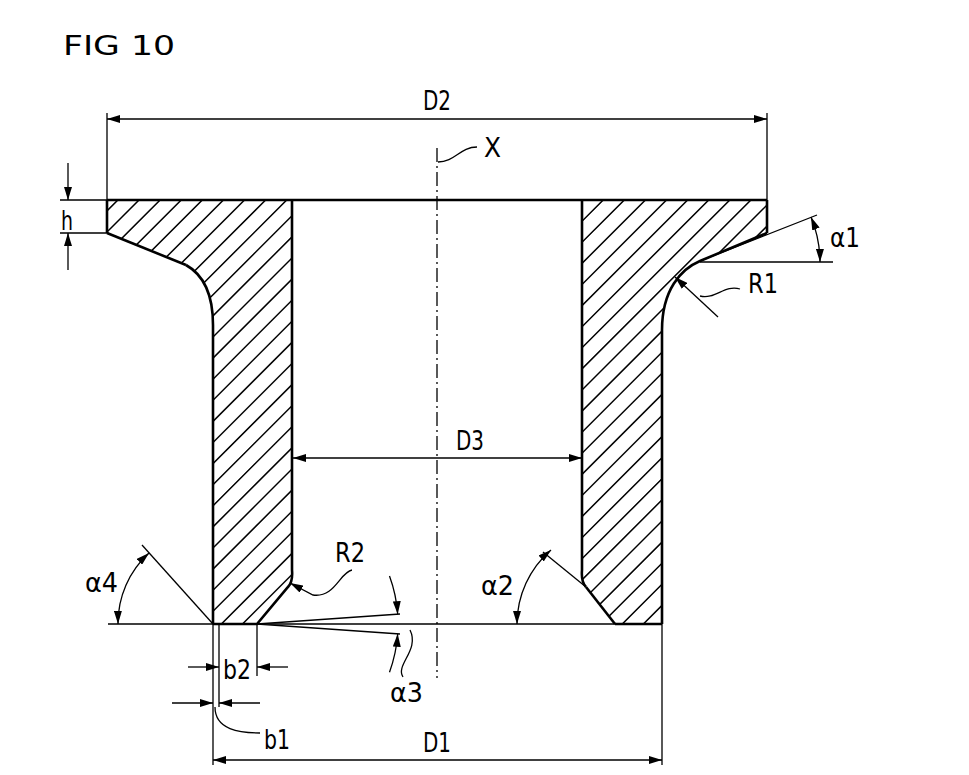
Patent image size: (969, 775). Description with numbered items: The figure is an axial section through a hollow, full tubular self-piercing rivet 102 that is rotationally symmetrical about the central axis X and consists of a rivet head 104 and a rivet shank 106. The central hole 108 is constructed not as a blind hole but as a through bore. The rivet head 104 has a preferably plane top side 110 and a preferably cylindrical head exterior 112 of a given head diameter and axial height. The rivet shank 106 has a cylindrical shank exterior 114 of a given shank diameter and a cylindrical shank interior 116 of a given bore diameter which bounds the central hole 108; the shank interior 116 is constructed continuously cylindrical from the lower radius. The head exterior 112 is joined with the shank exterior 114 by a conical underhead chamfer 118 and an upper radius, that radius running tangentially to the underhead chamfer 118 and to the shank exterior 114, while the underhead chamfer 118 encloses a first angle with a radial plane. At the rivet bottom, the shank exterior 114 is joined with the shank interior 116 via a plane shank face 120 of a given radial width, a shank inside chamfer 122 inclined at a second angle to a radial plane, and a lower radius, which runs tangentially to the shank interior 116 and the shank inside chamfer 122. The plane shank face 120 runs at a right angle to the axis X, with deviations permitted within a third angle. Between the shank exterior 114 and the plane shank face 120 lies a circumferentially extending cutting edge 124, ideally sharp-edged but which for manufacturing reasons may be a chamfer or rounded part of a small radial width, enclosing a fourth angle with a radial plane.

The self-piercing rivet 102 is at (732, 473).
The rivet head 104 is at (185, 267).
The rivet shank 106 is at (213, 417).
The central hole 108 is at (568, 368).
The top side 110 is at (217, 200).
The head exterior 112 is at (768, 217).
The shank exterior 114 is at (213, 465).
The shank interior 116 is at (293, 348).
The underhead chamfer 118 is at (132, 245).
The plane shank face 120 is at (637, 625).
The shank inside chamfer 122 is at (595, 621).
The cutting edge 124 is at (661, 622).